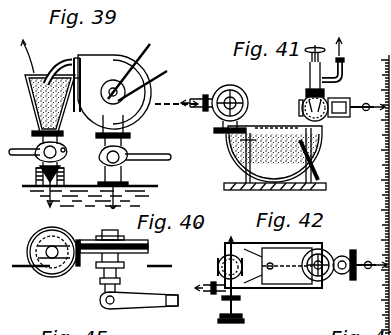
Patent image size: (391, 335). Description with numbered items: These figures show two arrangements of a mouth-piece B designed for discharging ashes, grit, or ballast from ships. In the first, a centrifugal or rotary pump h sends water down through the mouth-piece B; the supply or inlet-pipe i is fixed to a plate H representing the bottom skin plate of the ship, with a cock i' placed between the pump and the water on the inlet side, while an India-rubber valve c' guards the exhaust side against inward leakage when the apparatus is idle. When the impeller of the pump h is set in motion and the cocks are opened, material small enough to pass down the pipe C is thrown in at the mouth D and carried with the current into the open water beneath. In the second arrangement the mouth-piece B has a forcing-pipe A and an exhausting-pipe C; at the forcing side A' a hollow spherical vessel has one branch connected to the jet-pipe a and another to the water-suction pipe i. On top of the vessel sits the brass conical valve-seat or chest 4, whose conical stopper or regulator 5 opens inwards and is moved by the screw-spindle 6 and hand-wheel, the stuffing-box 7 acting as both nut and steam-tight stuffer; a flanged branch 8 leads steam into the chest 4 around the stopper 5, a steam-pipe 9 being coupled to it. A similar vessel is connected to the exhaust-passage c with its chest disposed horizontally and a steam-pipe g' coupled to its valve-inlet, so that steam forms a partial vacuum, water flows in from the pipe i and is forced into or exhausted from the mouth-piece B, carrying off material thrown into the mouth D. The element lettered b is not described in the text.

In FIG. 39, the mouth D is at (27, 75).
In FIG. 41, the mouth D is at (277, 121).
In FIG. 42, the mouth D is at (278, 264).
In FIG. 39, the jet-pipe a is at (46, 62).
In FIG. 39, the forcing-pipe A is at (70, 77).
In FIG. 39, the centrifugal pump h is at (137, 88).
In FIG. 41, the centrifugal pump h is at (339, 112).
In FIG. 39, the mouth-piece B is at (70, 101).
In FIG. 42, the mouth-piece B is at (279, 270).
In FIG. 39, the exhausting-pipe C is at (38, 149).
In FIG. 39, the exhaust-passage c is at (51, 184).
In FIG. 41, the exhaust-passage c is at (269, 136).
In FIG. 39, the plate H is at (90, 188).
In FIG. 39, the cock i' is at (113, 141).
In FIG. 40, the cock i' is at (92, 252).
In FIG. 39, the inlet-pipe i is at (134, 177).
In FIG. 41, the inlet-pipe i is at (367, 100).
In FIG. 42, the inlet-pipe i is at (371, 257).
In FIG. 39, the air supply pipe g' is at (192, 112).
In FIG. 41, the air supply pipe g' is at (196, 109).
In FIG. 42, the air supply pipe g' is at (210, 295).
In FIG. 41, the India-rubber valve c' is at (233, 109).
In FIG. 42, the India-rubber valve c' is at (223, 276).
In FIG. 41, the trough b is at (275, 159).
In FIG. 41, the conical stopper 5 is at (311, 99).
In FIG. 42, the conical stopper 5 is at (226, 270).
In FIG. 41, the screw-spindle 6 is at (315, 54).
In FIG. 42, the screw-spindle 6 is at (282, 282).
In FIG. 41, the stuffing-box 7 is at (312, 79).
In FIG. 41, the flanged branch 8 is at (333, 75).
In FIG. 41, the steam-pipe 9 is at (344, 53).
In FIG. 42, the steam-pipe 9 is at (329, 269).
In FIG. 40, the conical valve-seat 4 is at (118, 214).
In FIG. 42, the forcing side A' is at (273, 275).